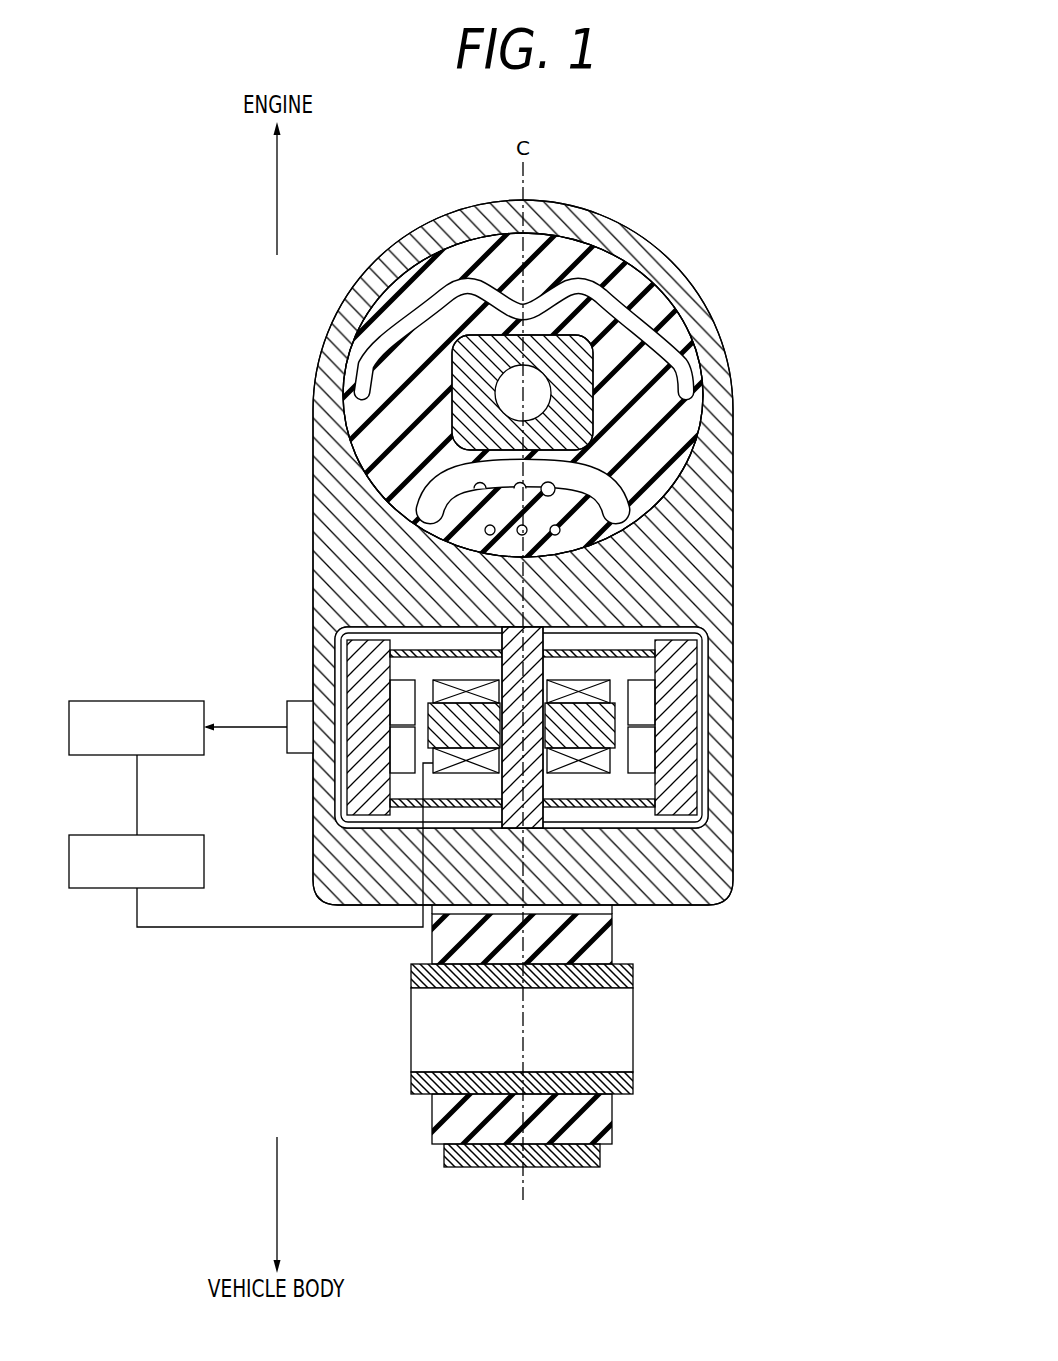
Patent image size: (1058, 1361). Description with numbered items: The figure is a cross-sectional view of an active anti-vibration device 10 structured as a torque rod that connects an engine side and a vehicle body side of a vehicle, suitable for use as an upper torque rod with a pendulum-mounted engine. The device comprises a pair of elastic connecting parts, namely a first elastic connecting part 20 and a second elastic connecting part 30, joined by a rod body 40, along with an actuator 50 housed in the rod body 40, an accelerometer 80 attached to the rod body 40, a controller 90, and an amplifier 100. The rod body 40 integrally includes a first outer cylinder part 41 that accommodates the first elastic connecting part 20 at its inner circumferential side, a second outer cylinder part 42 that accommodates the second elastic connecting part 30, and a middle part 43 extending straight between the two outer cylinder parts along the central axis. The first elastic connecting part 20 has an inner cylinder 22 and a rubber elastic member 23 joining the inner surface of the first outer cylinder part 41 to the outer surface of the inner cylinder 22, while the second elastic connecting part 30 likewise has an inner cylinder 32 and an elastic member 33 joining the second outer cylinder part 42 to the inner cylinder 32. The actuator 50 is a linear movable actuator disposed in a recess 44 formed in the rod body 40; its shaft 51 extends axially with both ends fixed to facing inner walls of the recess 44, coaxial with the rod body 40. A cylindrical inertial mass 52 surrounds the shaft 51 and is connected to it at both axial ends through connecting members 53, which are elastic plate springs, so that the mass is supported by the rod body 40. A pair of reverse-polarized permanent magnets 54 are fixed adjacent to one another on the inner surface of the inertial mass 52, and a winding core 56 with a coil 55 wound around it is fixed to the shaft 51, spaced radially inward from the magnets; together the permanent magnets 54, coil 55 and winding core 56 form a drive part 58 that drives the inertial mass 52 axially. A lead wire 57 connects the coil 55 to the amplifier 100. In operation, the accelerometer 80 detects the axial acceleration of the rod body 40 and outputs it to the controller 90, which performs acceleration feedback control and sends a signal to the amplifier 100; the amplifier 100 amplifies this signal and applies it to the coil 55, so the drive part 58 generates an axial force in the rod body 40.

The active anti-vibration device 10 is at (718, 250).
The first elastic connecting part 20 is at (692, 333).
The inner cylinder 22 is at (568, 410).
The elastic member 23 is at (390, 430).
The second elastic connecting part 30 is at (408, 1118).
The inner cylinder 32 is at (632, 1082).
The elastic member 33 is at (600, 1112).
The rod body 40 is at (733, 592).
The first outer cylinder part 41 is at (605, 232).
The second outer cylinder part 42 is at (600, 1157).
The middle part 43 is at (663, 600).
The recess 44 is at (663, 635).
The actuator 50 is at (380, 790).
The shaft 51 is at (510, 813).
The inertial mass 52 is at (685, 658).
The connecting member 53 is at (600, 656).
The permanent magnet 54 is at (655, 690).
The coil 55 is at (612, 778).
The winding core 56 is at (650, 720).
The lead wire 57 is at (257, 927).
The drive part 58 is at (836, 718).
The accelerometer 80 is at (287, 713).
The controller 90 is at (122, 701).
The amplifier 100 is at (115, 835).